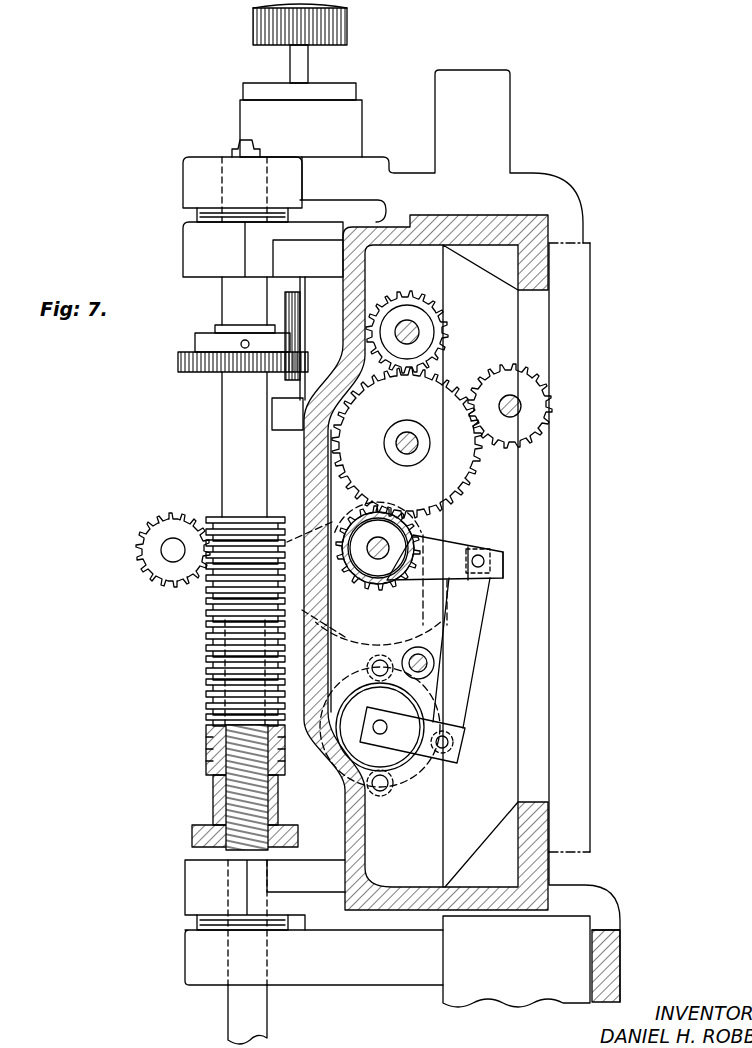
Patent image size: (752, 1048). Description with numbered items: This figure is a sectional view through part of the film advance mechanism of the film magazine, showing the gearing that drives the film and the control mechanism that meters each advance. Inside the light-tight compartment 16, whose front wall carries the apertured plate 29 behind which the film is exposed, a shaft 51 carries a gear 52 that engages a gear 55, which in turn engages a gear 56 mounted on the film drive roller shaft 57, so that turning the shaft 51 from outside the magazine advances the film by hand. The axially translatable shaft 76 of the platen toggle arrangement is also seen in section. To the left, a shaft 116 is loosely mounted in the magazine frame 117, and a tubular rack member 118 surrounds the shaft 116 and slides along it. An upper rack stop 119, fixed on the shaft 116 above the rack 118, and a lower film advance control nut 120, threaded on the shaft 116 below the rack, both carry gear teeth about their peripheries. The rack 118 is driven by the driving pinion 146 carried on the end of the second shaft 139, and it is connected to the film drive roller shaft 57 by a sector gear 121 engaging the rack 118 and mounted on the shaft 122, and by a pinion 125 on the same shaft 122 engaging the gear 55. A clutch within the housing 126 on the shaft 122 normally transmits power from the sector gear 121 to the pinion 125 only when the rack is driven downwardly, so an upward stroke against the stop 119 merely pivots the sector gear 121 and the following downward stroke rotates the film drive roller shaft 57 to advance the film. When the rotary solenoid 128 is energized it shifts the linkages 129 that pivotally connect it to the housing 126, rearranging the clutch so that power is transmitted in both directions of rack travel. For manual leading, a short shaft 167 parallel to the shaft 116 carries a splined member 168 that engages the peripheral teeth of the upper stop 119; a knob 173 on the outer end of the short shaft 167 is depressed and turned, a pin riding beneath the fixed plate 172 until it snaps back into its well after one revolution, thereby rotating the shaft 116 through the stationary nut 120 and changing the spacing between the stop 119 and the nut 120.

The light-tight compartment 16 is at (388, 258).
The apertured plate 29 is at (592, 478).
The shaft 51 is at (416, 331).
The gear 52 is at (407, 298).
The gear 55 is at (448, 456).
The gear 56 is at (529, 394).
The film drive roller shaft 57 is at (508, 395).
The axially translatable shaft 76 is at (432, 657).
The shaft 116 is at (228, 432).
The magazine frame 117 is at (193, 189).
The tubular rack member 118 is at (210, 661).
The upper rack stop 119 is at (196, 374).
The film advance control nut 120 is at (219, 797).
The sector gear 121 is at (289, 541).
The shaft 122 is at (378, 562).
The pinion 125 is at (367, 581).
The housing 126 is at (414, 537).
The rotary solenoid 128 is at (390, 758).
The linkages 129 is at (482, 658).
The second shaft 139 is at (173, 557).
The driving pinion 146 is at (175, 516).
The short shaft 167 is at (296, 61).
The splined member 168 is at (290, 303).
The fixed plate 172 is at (341, 92).
The knob 173 is at (265, 27).